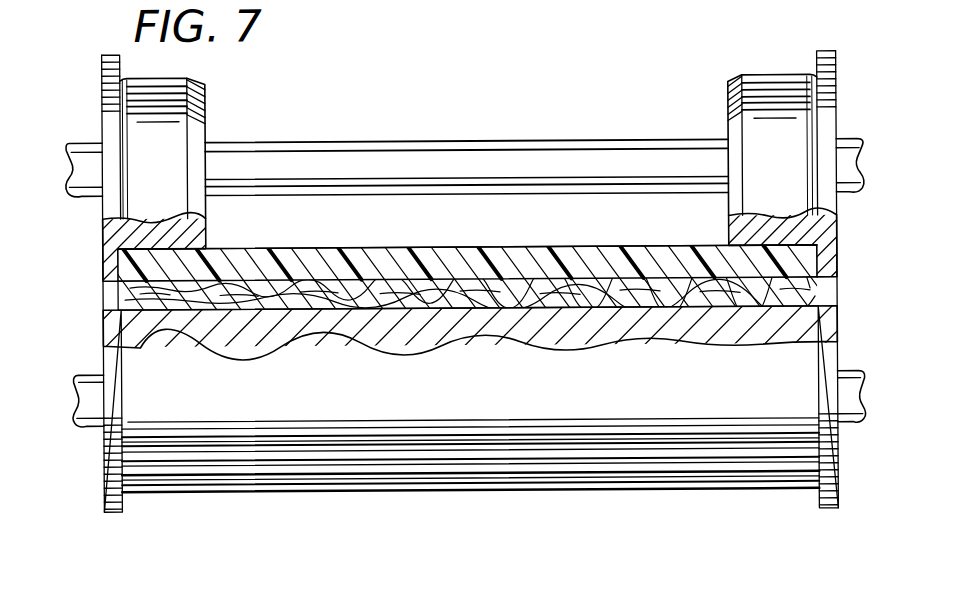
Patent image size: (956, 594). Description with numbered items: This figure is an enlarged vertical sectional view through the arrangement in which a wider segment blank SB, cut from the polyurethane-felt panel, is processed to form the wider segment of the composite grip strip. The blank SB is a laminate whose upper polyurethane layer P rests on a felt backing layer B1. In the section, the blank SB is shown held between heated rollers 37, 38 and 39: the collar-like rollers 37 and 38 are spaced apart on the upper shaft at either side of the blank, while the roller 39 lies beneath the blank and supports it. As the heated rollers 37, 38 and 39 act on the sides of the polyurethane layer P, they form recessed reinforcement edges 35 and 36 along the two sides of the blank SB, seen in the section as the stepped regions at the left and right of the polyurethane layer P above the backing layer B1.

The recessed reinforcement edge 35 is at (104, 251).
The recessed reinforcement edge 36 is at (800, 246).
The heated roller 37 is at (177, 134).
The heated roller 38 is at (750, 100).
The heated roller 39 is at (455, 395).
The blank SB is at (400, 250).
The polyurethane layer P is at (633, 250).
The backing layer B1 is at (818, 297).